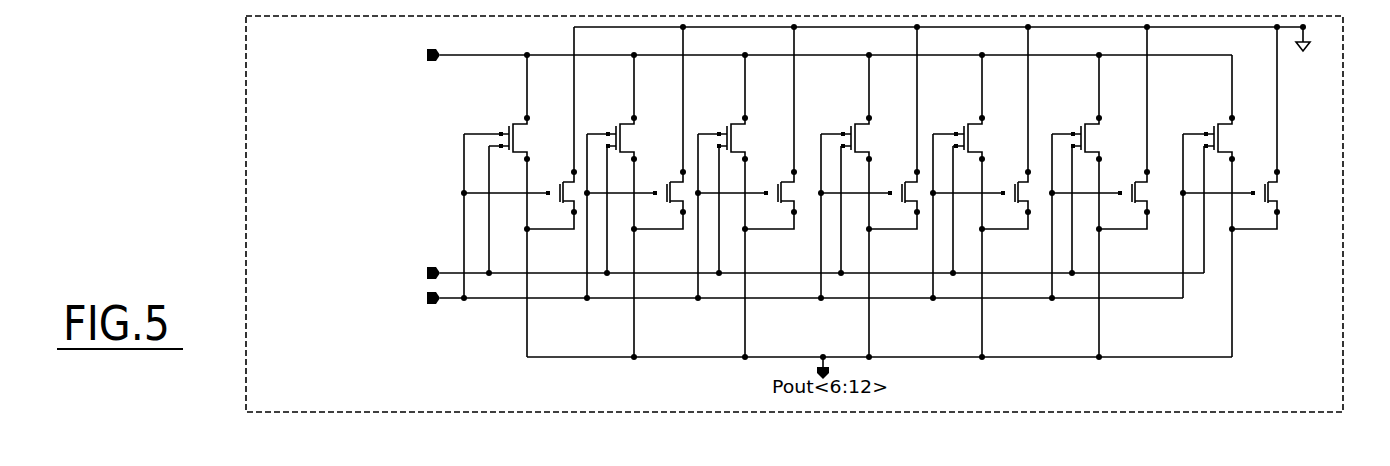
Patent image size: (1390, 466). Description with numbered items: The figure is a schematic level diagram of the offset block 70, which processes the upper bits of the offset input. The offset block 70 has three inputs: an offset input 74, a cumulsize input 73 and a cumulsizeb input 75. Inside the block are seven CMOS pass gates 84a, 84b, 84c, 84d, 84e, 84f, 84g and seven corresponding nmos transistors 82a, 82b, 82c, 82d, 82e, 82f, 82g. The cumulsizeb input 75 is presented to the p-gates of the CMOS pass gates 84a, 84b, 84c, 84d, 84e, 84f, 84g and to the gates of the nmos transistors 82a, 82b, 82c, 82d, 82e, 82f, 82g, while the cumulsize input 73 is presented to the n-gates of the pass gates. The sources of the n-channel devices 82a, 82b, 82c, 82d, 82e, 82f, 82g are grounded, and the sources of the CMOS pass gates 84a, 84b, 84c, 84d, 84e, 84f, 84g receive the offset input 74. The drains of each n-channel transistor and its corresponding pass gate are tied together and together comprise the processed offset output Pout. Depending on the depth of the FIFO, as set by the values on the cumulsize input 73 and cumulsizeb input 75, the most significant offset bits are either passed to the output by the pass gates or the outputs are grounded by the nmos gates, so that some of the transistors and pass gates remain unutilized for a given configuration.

The offset block 70 is at (1344, 110).
The cumulsize input 73 is at (452, 272).
The offset input 74 is at (490, 55).
The cumulsizeb input 75 is at (452, 300).
The nmos transistor 82a is at (574, 172).
The nmos transistor 82b is at (683, 172).
The nmos transistor 82c is at (794, 172).
The nmos transistor 82d is at (917, 172).
The nmos transistor 82e is at (1028, 172).
The nmos transistor 82f is at (1147, 172).
The nmos transistor 82g is at (1277, 172).
The CMOS pass gate 84a is at (513, 124).
The CMOS pass gate 84b is at (620, 124).
The CMOS pass gate 84c is at (731, 124).
The CMOS pass gate 84d is at (855, 124).
The CMOS pass gate 84e is at (968, 124).
The CMOS pass gate 84f is at (1085, 124).
The CMOS pass gate 84g is at (1218, 124).